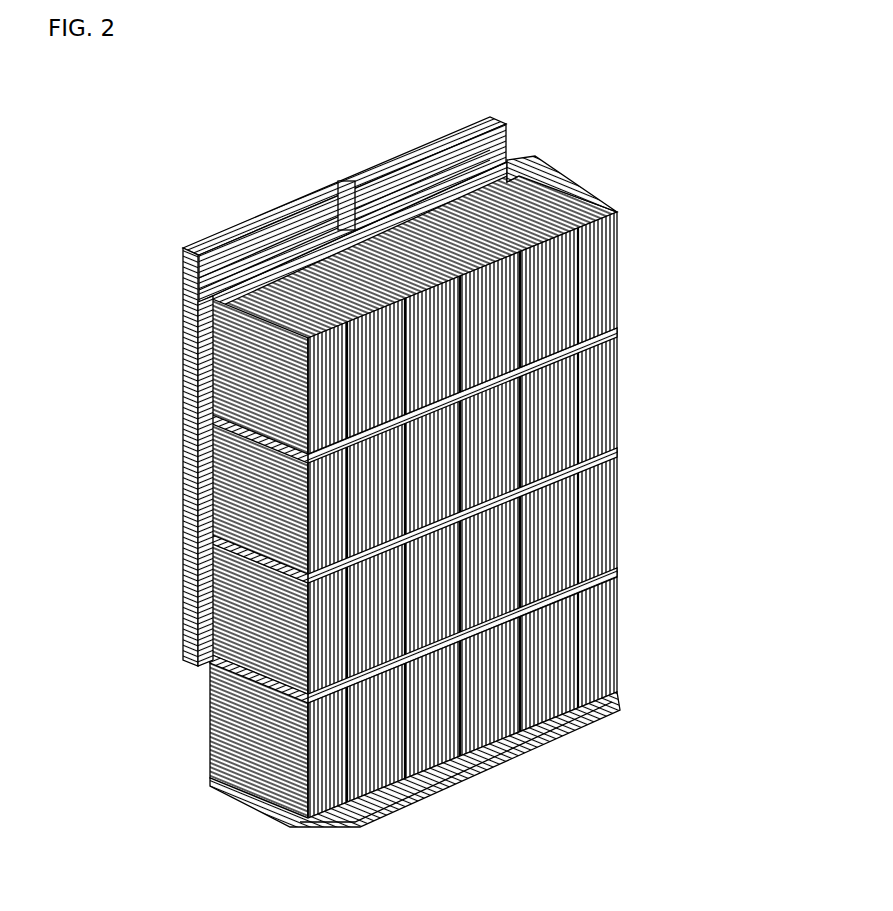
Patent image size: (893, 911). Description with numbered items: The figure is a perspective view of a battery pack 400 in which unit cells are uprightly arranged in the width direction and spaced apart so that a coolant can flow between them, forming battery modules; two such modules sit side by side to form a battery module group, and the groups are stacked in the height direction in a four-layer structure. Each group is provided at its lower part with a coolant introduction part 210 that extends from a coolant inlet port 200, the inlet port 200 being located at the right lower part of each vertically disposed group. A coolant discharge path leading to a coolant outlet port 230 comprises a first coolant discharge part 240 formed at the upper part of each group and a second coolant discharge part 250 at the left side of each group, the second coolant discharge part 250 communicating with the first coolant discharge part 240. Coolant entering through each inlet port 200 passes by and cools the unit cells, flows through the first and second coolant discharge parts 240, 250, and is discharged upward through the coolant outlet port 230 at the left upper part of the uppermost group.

The battery pack 400 is at (74, 144).
The coolant inlet port 200 is at (617, 344).
The coolant introduction part 210 is at (258, 810).
The coolant outlet port 230 is at (288, 210).
The first coolant discharge part 240 is at (580, 190).
The second coolant discharge part 250 is at (183, 381).